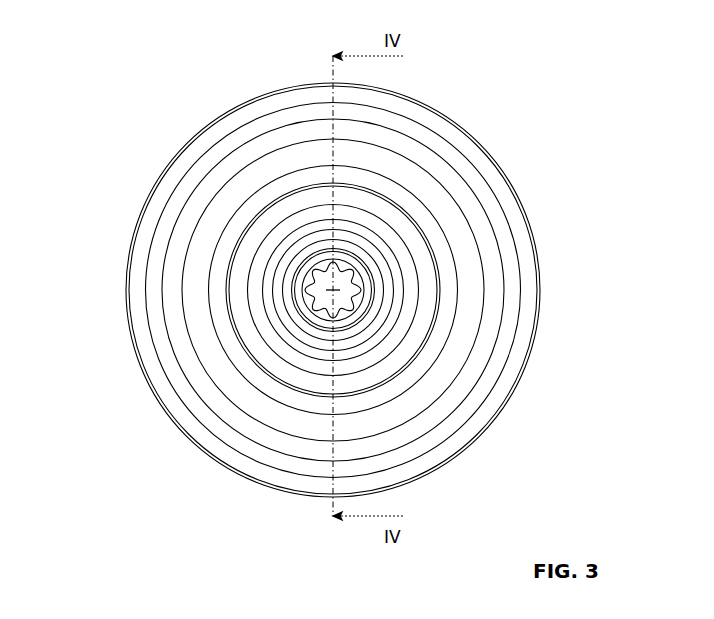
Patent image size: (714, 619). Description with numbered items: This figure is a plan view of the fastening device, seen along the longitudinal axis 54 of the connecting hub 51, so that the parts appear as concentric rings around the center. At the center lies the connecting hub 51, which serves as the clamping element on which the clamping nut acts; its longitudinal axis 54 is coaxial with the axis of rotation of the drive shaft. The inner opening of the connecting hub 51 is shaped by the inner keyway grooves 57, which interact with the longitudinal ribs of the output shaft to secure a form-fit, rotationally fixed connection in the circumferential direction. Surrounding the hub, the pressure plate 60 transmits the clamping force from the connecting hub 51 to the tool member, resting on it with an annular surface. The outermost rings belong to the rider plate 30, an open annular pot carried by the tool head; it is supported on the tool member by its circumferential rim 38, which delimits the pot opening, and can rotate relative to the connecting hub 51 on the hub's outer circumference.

The rider plate 30 is at (170, 360).
The circumferential rim 38 is at (177, 148).
The connecting hub 51 is at (365, 288).
The longitudinal axis 54 is at (333, 290).
The inner keyway grooves 57 is at (353, 265).
The pressure plate 60 is at (422, 324).